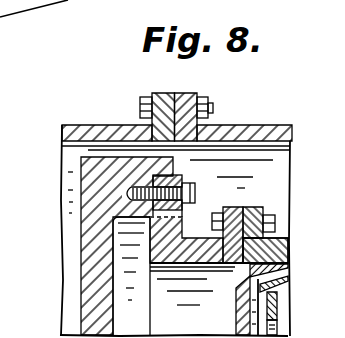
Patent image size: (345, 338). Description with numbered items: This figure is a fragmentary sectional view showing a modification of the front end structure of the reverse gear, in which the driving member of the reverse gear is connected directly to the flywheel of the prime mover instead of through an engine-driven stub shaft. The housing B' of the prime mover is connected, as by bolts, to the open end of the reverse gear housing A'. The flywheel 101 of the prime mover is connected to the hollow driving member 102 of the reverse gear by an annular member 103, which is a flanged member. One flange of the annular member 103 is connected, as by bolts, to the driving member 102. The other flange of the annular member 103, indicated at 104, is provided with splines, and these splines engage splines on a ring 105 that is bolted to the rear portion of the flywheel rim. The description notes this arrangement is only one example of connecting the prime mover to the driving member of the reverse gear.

The reverse gear housing A' is at (216, 117).
The housing of the prime mover B' is at (107, 118).
The flywheel 101 is at (92, 223).
The hollow driving member 102 is at (264, 220).
The annular member 103 is at (222, 252).
The flange 104 is at (166, 222).
The ring 105 is at (163, 178).